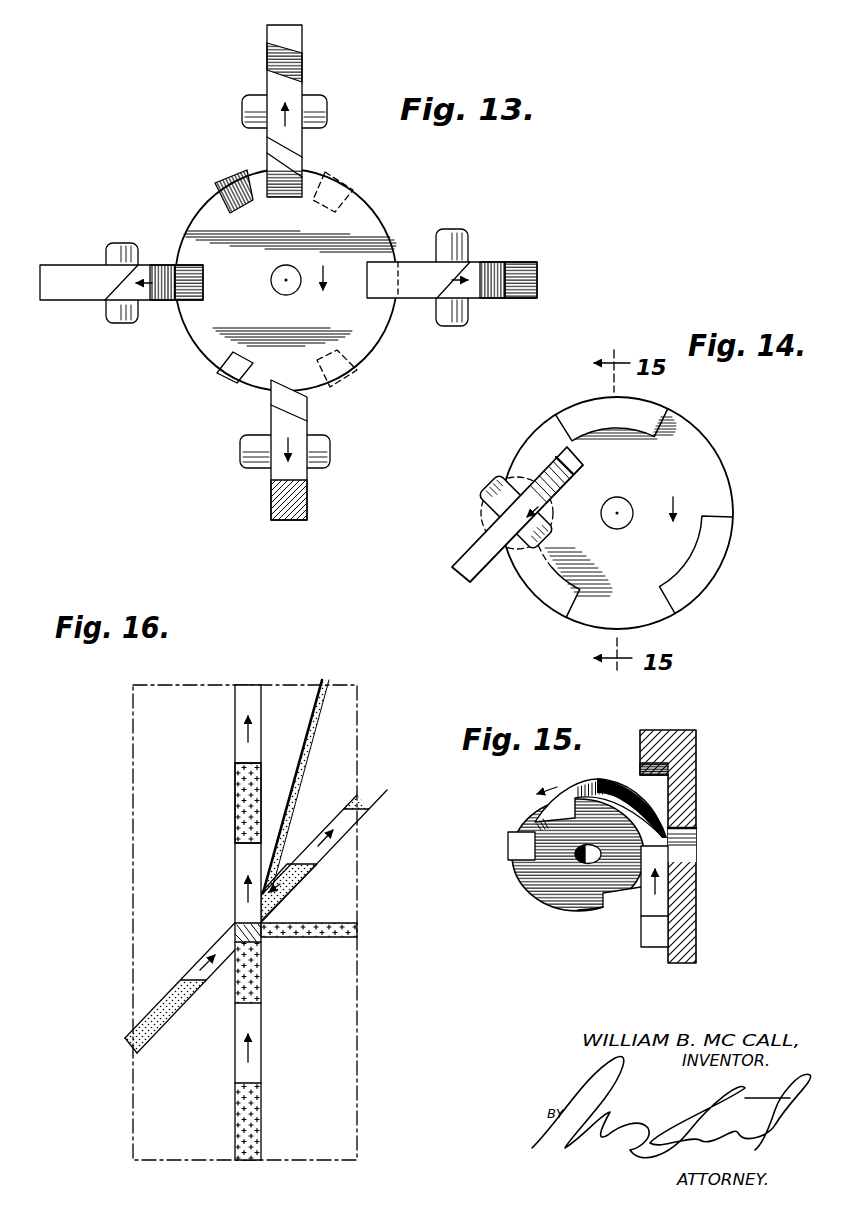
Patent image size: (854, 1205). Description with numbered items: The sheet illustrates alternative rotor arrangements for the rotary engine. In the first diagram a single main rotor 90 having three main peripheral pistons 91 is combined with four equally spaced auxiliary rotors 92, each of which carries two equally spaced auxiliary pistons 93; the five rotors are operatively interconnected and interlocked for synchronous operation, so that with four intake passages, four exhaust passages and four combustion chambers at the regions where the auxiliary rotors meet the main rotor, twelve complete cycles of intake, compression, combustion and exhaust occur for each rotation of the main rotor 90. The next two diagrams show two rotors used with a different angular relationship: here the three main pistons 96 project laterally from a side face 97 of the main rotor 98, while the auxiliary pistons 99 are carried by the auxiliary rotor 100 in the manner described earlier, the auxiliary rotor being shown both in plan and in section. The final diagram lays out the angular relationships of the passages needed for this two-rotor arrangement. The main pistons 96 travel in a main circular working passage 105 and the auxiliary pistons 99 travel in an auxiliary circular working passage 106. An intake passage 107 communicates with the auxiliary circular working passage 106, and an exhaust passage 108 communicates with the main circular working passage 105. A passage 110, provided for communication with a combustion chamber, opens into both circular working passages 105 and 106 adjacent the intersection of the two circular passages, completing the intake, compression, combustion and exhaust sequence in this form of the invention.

In FIG. 13, the main rotor 90 is at (216, 331).
In FIG. 13, the main peripheral pistons 91 is at (194, 218).
In FIG. 13, the auxiliary rotors 92 is at (302, 80).
In FIG. 13, the auxiliary pistons 93 is at (302, 44).
In FIG. 14, the main pistons 96 is at (655, 412).
In FIG. 15, the main pistons 96 is at (640, 745).
In FIG. 16, the main pistons 96 is at (234, 739).
In FIG. 14, the side face 97 is at (648, 482).
In FIG. 15, the side face 97 is at (670, 806).
In FIG. 14, the main rotor 98 is at (718, 451).
In FIG. 15, the main rotor 98 is at (700, 774).
In FIG. 14, the auxiliary pistons 99 is at (567, 473).
In FIG. 15, the auxiliary pistons 99 is at (590, 795).
In FIG. 16, the auxiliary pistons 99 is at (350, 829).
In FIG. 14, the auxiliary rotor 100 is at (489, 523).
In FIG. 15, the auxiliary rotor 100 is at (565, 912).
In FIG. 16, the main circular working passage 105 is at (235, 812).
In FIG. 16, the auxiliary circular working passage 106 is at (300, 882).
In FIG. 16, the intake passage 107 is at (300, 766).
In FIG. 16, the exhaust passage 108 is at (315, 939).
In FIG. 16, the passage 110 is at (235, 915).